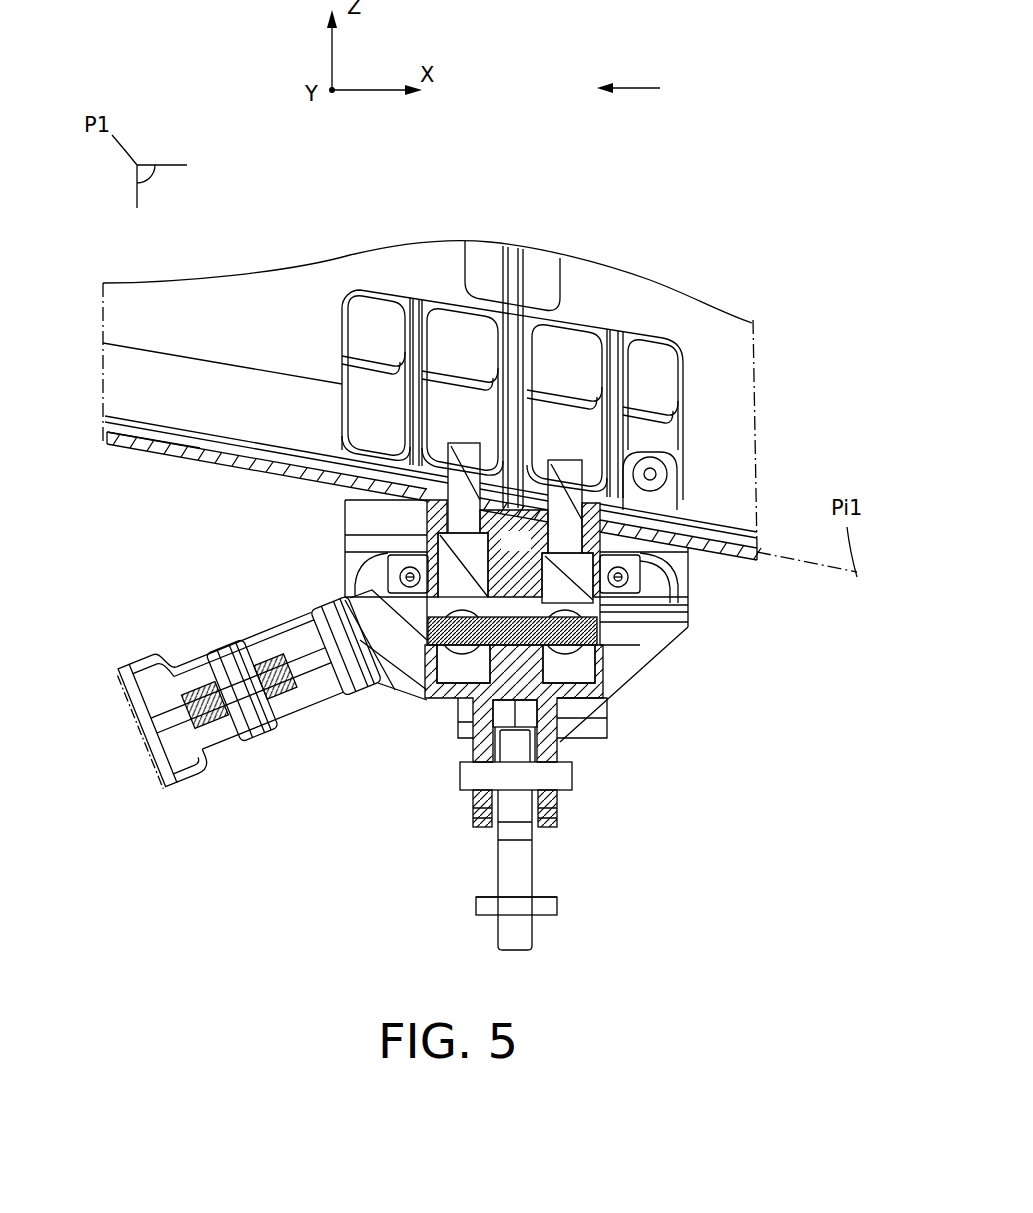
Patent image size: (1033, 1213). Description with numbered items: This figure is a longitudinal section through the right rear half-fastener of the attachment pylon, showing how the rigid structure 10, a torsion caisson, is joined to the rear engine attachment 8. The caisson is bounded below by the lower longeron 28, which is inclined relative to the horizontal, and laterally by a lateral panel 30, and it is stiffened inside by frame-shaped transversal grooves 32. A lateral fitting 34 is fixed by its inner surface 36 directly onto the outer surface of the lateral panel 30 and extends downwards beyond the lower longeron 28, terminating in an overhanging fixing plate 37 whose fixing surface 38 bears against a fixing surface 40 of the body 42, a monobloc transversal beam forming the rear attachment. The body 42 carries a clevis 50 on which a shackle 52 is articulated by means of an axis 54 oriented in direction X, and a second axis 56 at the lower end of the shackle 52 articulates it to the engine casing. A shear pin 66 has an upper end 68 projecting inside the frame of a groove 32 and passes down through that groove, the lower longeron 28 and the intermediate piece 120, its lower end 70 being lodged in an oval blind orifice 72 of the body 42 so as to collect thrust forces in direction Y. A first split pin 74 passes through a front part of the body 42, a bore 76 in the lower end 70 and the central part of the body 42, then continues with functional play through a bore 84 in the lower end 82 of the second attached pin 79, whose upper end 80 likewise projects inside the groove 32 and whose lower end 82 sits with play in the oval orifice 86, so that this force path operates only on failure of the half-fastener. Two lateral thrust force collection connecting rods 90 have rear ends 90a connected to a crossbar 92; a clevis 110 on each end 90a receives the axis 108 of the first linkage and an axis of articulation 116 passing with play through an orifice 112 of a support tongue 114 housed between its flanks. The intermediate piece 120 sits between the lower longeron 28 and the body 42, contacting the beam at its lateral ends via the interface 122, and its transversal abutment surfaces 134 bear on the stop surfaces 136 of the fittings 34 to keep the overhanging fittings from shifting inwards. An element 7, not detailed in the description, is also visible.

The vehicle travel direction 7 is at (656, 88).
The rear engine attachment 8 is at (668, 797).
The rigid structure 10 is at (208, 352).
The lower longeron 28 is at (114, 455).
The lateral panel 30 is at (726, 330).
The transversal groove 32 is at (538, 334).
The lateral fitting 34 is at (335, 526).
The inner surface 36 is at (330, 541).
The fixing plate 37 is at (673, 592).
The fixing surface 38 is at (655, 622).
The fixing surface 40 is at (652, 617).
The rear engine attachment body 42 is at (655, 690).
The clevis 50 is at (560, 803).
The shackle 52 is at (533, 880).
The plate washer 54 is at (458, 784).
The second axis 56 is at (477, 907).
The pin 66 is at (440, 565).
The upper end 68 is at (463, 447).
The lower end 70 is at (425, 680).
The orifice 72 is at (405, 640).
The first split pin 74 is at (617, 650).
The bore 76 is at (514, 553).
The bearing hood 79 is at (650, 550).
The upper end 80 is at (570, 475).
The lower end 82 is at (578, 690).
The bore 84 is at (571, 531).
The orifice 86 is at (627, 643).
The lateral thrust force collection connecting rod 90 is at (155, 793).
The rear end 90a is at (184, 655).
The crossbar 92 is at (216, 745).
The axis 108 is at (262, 730).
The clevis 110 is at (335, 650).
The orifice 112 is at (305, 708).
The support tongue 114 is at (312, 657).
The axis of articulation 116 is at (372, 680).
The intermediate piece 120 is at (414, 499).
The interface 122 is at (477, 660).
The transversal abutment surface 134 is at (418, 500).
The stop surface 136 is at (585, 573).